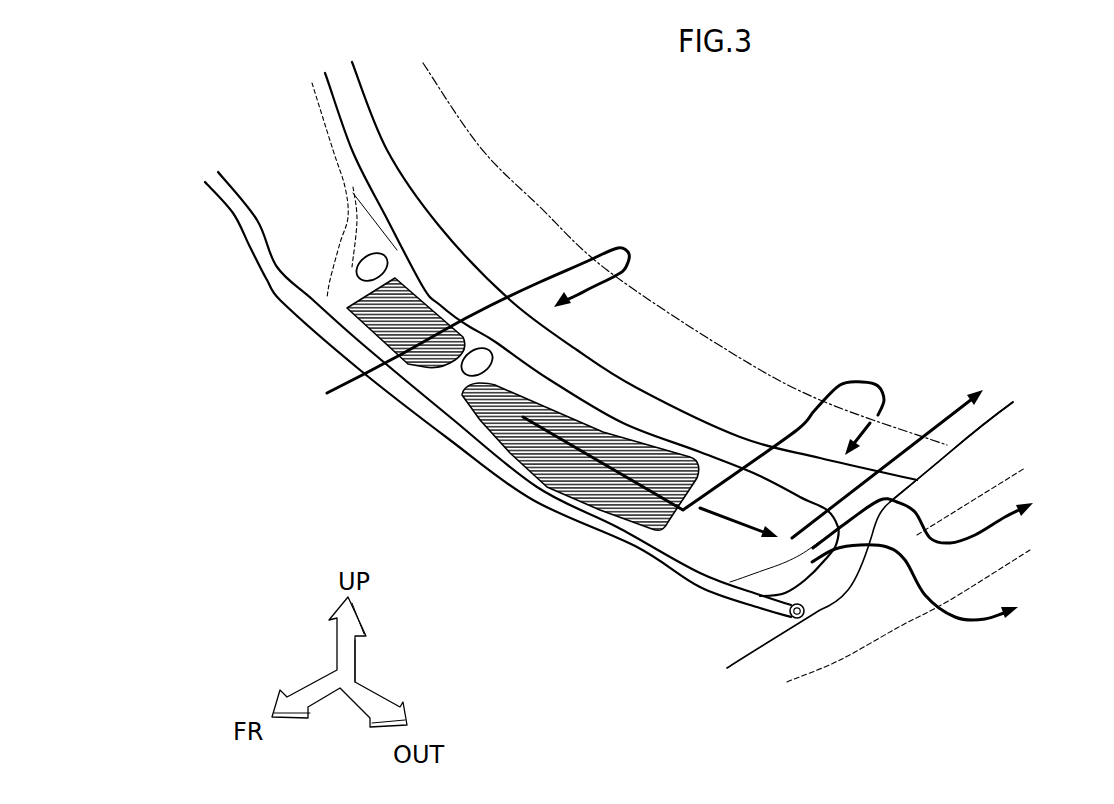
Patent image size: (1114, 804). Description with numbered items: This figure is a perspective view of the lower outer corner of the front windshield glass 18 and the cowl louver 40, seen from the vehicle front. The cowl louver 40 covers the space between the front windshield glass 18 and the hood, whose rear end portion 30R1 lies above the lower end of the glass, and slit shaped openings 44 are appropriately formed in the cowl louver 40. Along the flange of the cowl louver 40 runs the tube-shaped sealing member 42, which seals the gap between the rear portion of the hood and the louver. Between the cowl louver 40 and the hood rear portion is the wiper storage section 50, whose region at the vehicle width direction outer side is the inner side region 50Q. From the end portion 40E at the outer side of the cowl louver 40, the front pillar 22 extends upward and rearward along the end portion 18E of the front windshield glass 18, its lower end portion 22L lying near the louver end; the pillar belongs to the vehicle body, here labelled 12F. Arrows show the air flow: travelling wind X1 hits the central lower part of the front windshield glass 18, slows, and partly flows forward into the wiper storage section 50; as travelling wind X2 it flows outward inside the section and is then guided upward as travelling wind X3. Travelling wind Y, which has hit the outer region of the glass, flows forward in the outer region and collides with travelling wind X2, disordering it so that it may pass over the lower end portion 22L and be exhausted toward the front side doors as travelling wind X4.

The front pillar 12F is at (160, 282).
The front windshield glass 18 is at (915, 375).
The end portions of the front windshield glass 18E is at (973, 427).
The front pillar 22 is at (1032, 478).
The lower end portion of the front pillar 22L is at (873, 580).
The rear end portion of the hood 30R1 is at (673, 317).
The cowl louver 40 is at (633, 414).
The end portion of the cowl louver 40E is at (767, 577).
The sealing member 42 is at (457, 437).
The slit shaped openings 44 is at (370, 336).
The wiper storage section 50 is at (452, 278).
The inner side region of the wiper storage section 50Q is at (745, 563).
The travelling wind X1 is at (605, 243).
The travelling wind X2 is at (722, 514).
The travelling wind X3 is at (950, 398).
The travelling wind X4 is at (1003, 527).
The travelling wind Y is at (857, 378).